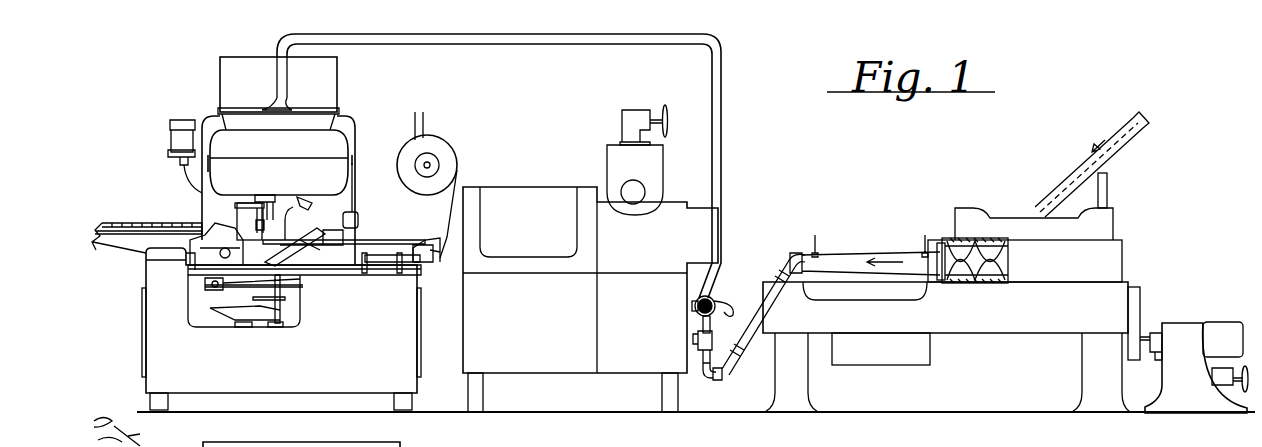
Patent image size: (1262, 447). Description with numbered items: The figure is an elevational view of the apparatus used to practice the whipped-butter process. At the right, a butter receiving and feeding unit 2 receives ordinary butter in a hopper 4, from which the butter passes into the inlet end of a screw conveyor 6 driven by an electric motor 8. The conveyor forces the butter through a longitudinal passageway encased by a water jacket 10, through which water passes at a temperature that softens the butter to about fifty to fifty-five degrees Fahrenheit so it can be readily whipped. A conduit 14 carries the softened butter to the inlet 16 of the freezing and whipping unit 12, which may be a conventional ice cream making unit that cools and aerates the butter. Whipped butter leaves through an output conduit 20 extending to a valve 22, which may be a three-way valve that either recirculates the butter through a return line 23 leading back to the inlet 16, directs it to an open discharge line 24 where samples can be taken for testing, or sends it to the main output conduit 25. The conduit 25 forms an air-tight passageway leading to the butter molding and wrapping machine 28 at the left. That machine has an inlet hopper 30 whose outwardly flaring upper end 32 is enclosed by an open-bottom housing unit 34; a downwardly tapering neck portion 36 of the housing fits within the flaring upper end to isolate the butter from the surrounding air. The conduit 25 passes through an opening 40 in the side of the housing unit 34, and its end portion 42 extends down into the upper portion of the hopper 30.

The butter receiving and feeding unit 2 is at (1005, 262).
The hopper 4 is at (1012, 220).
The screw conveyor 6 is at (975, 272).
The electric motor 8 is at (1219, 328).
The water jacket 10 is at (845, 256).
The freezing and whipping unit 12 is at (531, 178).
The conduit 14 is at (746, 348).
The inlet 16 is at (696, 347).
The output conduit 20 is at (694, 312).
The valve 22 is at (696, 301).
The return line 23 is at (702, 327).
The open discharge line 24 is at (727, 302).
The main output conduit 25 is at (548, 45).
The butter molding and wrapping machine 28 is at (370, 138).
The inlet hopper 30 is at (274, 183).
The outwardly flaring upper end 32 is at (340, 118).
The open-bottom housing unit 34 is at (220, 72).
The downwardly tapering neck portion 36 is at (238, 110).
The opening 40 is at (275, 110).
The end portion of conduit 42 is at (286, 104).